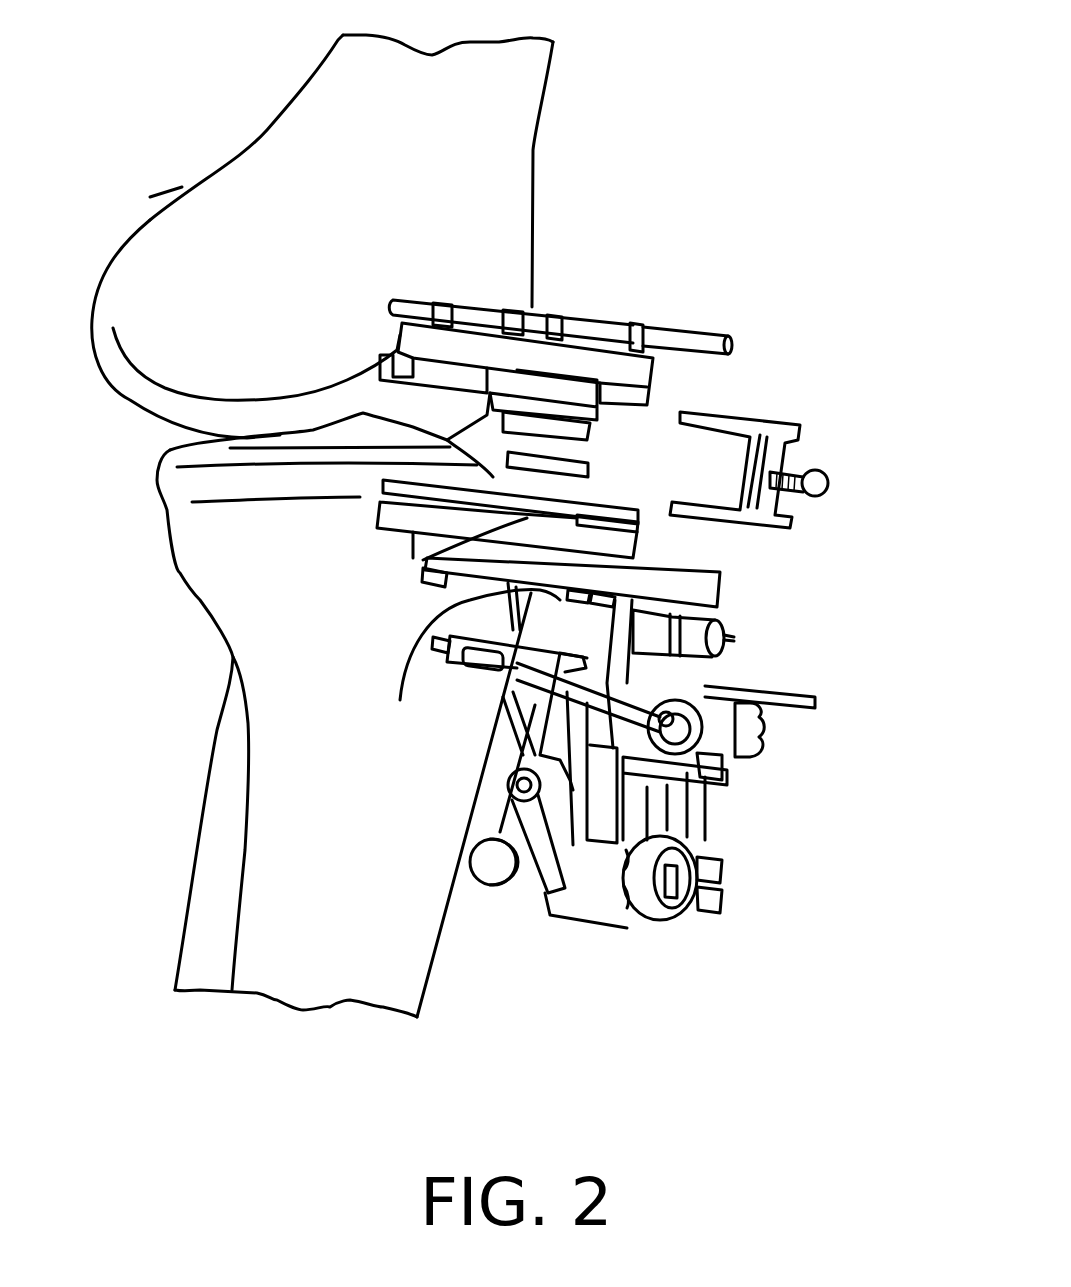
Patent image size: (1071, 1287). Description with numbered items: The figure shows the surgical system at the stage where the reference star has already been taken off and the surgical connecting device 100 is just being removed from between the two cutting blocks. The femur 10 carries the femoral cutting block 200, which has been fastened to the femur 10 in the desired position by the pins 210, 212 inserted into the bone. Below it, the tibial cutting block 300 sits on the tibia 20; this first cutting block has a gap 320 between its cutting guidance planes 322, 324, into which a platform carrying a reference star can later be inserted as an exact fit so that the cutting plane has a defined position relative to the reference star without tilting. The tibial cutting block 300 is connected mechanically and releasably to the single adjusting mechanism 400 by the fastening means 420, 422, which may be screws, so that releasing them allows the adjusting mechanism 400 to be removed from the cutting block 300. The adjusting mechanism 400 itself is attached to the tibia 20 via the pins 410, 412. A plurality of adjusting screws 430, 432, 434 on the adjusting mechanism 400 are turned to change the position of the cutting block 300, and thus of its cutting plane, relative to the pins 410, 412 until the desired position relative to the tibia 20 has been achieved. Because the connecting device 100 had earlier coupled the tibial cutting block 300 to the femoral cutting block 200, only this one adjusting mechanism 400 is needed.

The femur 10 is at (329, 112).
The tibia 20 is at (247, 601).
The surgical connecting device 100 is at (813, 453).
The femoral cutting block 200 is at (649, 337).
The pin 210 is at (480, 313).
The pin 212 is at (683, 337).
The tibial cutting block 300 is at (599, 537).
The gap 320 is at (703, 569).
The cutting guidance plane 322 is at (575, 503).
The cutting guidance plane 324 is at (423, 558).
The adjusting mechanism 400 is at (612, 802).
The pin 410 is at (497, 750).
The pin 412 is at (816, 703).
The fastening means 420 is at (423, 575).
The fastening means 422 is at (472, 667).
The adjusting screw 430 is at (497, 880).
The adjusting screw 432 is at (667, 922).
The adjusting screw 434 is at (760, 733).